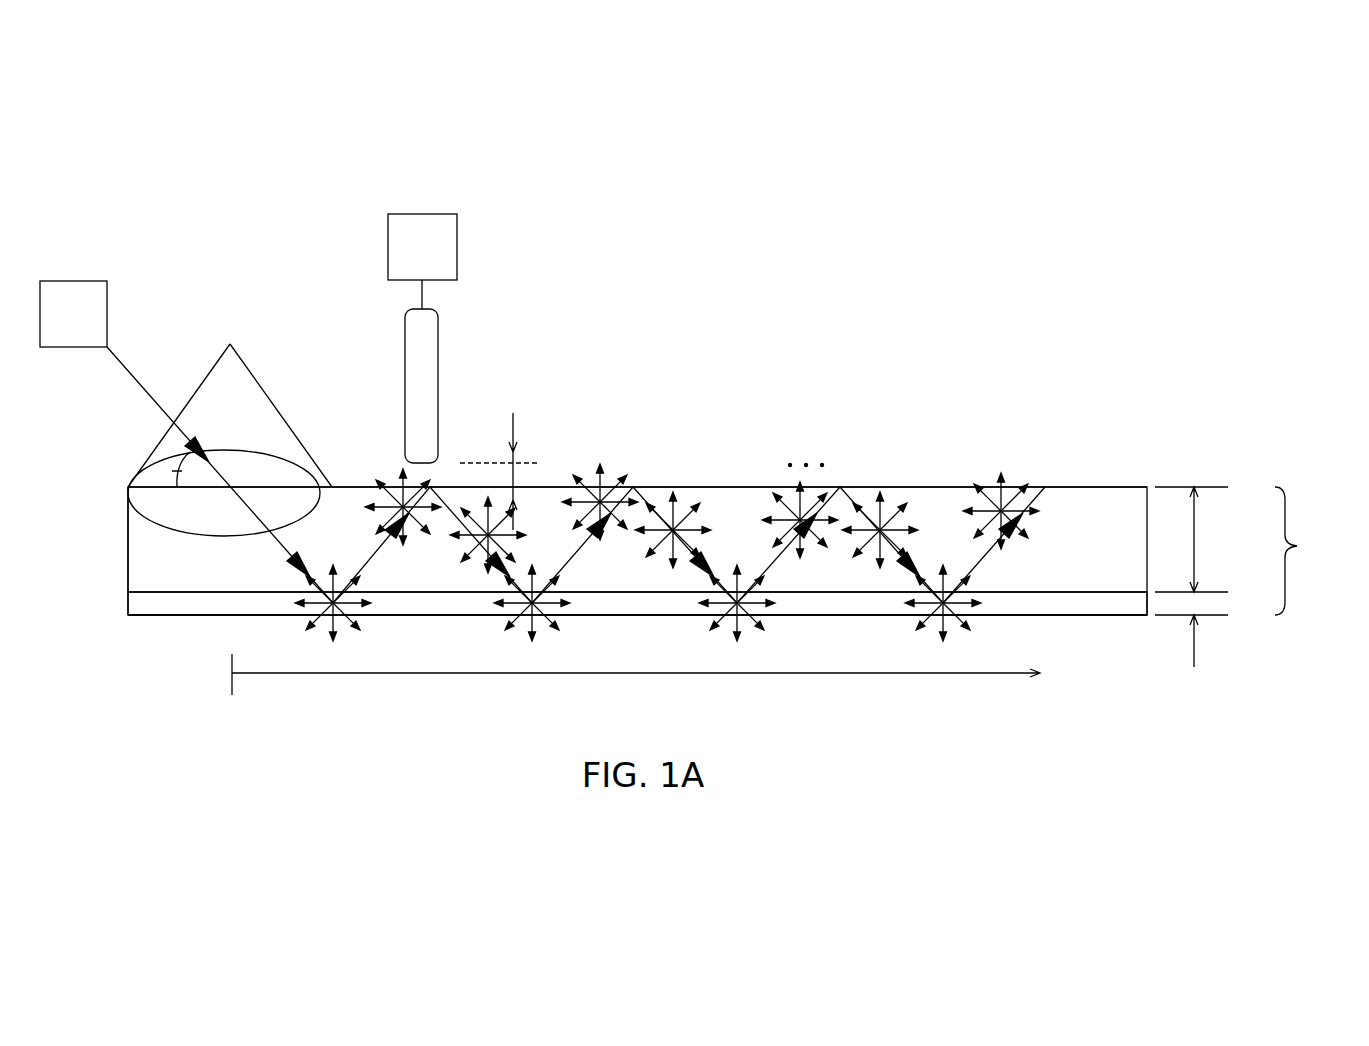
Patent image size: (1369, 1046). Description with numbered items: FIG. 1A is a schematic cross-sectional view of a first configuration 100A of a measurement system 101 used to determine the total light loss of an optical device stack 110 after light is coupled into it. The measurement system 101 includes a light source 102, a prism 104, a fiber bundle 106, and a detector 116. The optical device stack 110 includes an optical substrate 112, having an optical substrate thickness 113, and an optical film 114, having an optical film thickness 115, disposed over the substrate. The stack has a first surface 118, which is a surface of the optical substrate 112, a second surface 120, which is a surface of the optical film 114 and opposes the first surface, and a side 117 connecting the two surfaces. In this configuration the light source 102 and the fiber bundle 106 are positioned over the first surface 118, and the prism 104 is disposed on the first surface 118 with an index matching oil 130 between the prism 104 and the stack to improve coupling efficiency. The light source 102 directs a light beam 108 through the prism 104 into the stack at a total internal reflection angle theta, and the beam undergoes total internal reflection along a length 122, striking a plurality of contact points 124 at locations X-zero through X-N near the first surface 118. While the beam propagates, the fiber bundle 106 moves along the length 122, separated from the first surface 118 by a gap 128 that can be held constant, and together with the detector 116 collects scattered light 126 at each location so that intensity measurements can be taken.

The first configuration 100A is at (1067, 331).
The measurement system 101 is at (1188, 355).
The light source 102 is at (56, 327).
The prism 104 is at (248, 368).
The fiber bundle 106 is at (438, 348).
The light beam 108 is at (128, 371).
The optical device stack 110 is at (1297, 546).
The optical substrate 112 is at (1092, 565).
The optical substrate thickness 113 is at (1196, 537).
The optical film 114 is at (1085, 610).
The optical film thickness 115 is at (1196, 608).
The detector 116 is at (404, 260).
The side 117 is at (128, 566).
The first surface 118 is at (868, 487).
The second surface 120 is at (868, 617).
The length 122 is at (732, 676).
The contact points 124 is at (733, 432).
The scattered light 126 is at (430, 487).
The gap 128 is at (517, 477).
The index matching oil 130 is at (133, 516).